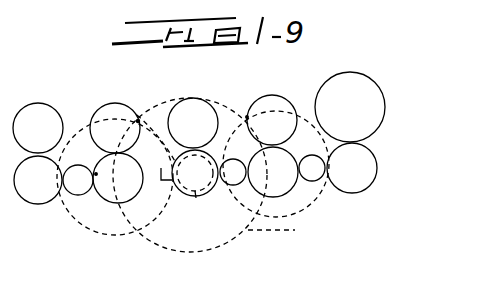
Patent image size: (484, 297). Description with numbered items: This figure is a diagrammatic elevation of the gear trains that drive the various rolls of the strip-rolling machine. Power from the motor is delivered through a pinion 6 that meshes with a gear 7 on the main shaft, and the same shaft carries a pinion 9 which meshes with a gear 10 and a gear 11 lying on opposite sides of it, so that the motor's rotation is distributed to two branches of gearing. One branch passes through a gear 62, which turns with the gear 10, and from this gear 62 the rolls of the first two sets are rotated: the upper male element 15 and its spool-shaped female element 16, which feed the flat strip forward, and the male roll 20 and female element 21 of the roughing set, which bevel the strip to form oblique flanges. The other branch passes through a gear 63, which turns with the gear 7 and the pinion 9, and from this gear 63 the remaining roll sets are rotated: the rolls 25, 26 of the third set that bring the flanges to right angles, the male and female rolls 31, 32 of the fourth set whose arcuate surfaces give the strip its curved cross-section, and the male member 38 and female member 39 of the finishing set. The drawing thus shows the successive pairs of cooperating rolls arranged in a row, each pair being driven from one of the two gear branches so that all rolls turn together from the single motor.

The pinion 6 is at (320, 213).
The gear 7 is at (240, 238).
The pinion 9 is at (196, 196).
The gear 10 is at (100, 236).
The gear 11 is at (293, 230).
The upper male element 15 is at (33, 98).
The female element 16 is at (25, 204).
The male roll 20 is at (118, 99).
The female element 21 is at (80, 195).
The roll 25 is at (208, 100).
The roll 26 is at (182, 197).
The male roll 31 is at (278, 96).
The female roll 32 is at (227, 186).
The male member 38 is at (385, 101).
The female member 39 is at (377, 160).
The gear 62 is at (108, 199).
The gear 63 is at (157, 165).